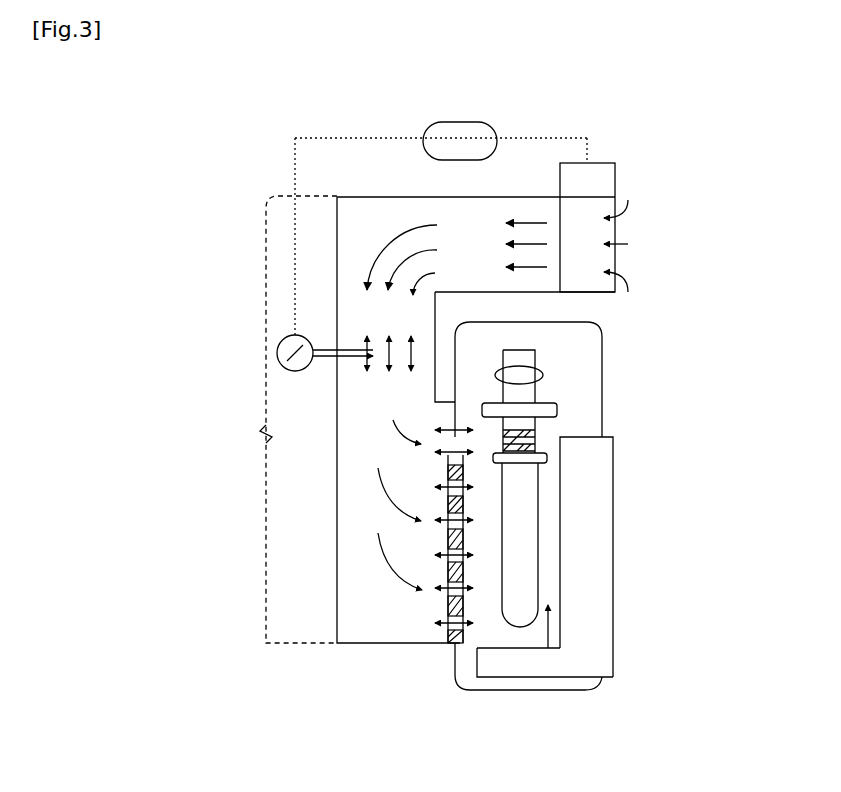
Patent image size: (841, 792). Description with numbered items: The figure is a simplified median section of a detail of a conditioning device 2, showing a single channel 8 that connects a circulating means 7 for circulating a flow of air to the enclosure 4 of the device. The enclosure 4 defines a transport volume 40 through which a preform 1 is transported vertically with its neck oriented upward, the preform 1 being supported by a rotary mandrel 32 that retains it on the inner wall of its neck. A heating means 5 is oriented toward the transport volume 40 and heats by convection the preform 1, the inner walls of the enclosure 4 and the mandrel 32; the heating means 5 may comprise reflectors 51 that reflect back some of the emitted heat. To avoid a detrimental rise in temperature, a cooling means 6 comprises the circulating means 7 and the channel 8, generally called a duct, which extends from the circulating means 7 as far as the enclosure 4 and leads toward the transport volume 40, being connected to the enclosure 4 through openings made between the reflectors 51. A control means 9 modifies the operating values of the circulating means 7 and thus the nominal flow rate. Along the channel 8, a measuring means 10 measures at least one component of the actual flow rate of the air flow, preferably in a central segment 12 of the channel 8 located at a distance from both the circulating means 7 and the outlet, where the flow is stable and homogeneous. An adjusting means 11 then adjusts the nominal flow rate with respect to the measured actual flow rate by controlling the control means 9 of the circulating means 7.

The preform 1 is at (534, 532).
The conditioning device 2 is at (285, 189).
The enclosure 4 is at (603, 358).
The heating means 5 is at (595, 545).
The cooling means 6 is at (605, 156).
The circulating means 7 is at (600, 235).
The channel 8 is at (337, 592).
The control means 9 is at (590, 181).
The measuring means 10 is at (277, 353).
The adjusting means 11 is at (488, 135).
The central segment 12 is at (244, 438).
The mandrel 32 is at (523, 383).
The transport volume 40 is at (550, 650).
The reflector 51 is at (445, 637).